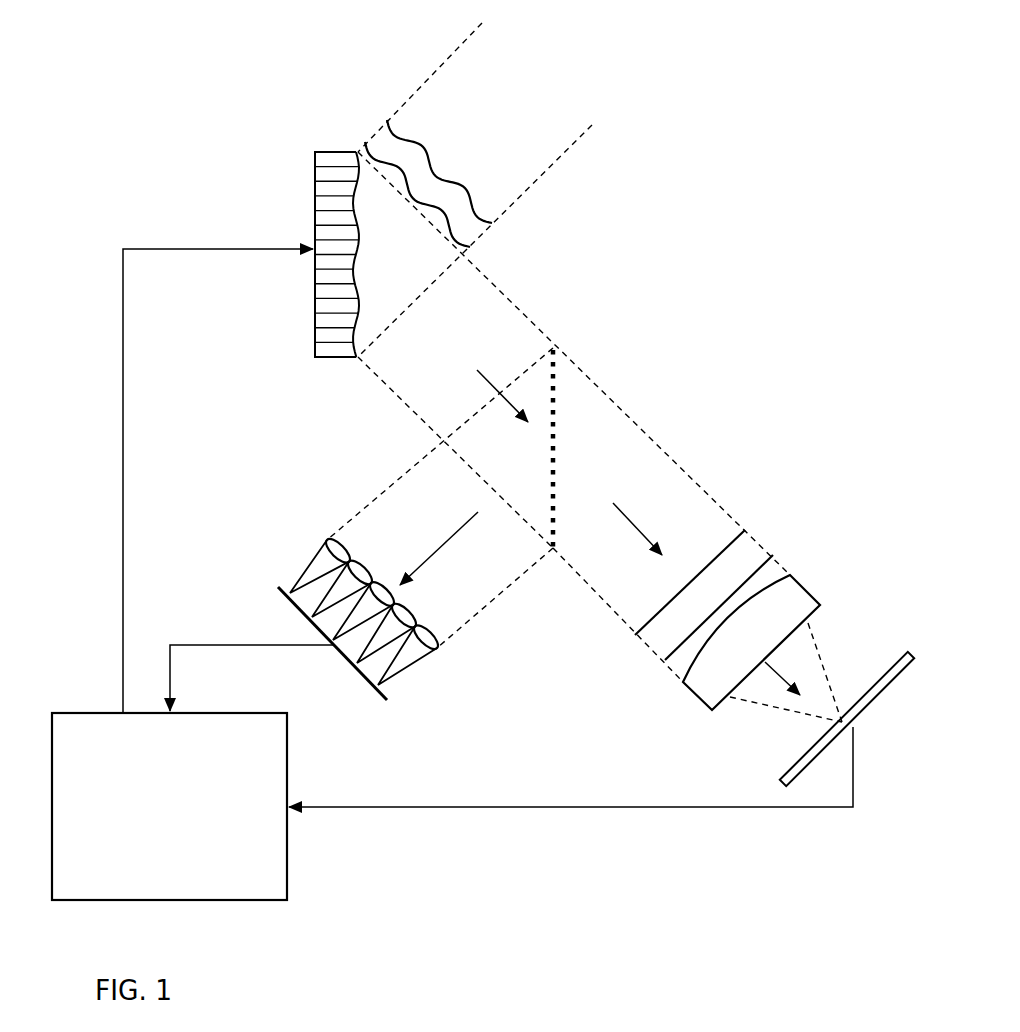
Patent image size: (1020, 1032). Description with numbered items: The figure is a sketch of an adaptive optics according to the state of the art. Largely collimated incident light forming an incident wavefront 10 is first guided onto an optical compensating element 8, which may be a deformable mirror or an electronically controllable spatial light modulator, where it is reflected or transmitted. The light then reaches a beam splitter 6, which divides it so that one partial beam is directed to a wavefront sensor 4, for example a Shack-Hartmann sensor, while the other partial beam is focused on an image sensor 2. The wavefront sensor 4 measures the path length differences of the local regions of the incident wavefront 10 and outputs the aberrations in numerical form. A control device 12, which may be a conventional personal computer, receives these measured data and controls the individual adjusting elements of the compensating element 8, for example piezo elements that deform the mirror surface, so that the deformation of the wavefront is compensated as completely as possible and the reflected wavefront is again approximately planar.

The image sensor 2 is at (847, 716).
The wavefront sensor 4 is at (357, 606).
The beam splitter 6 is at (569, 426).
The optical compensating element 8 is at (316, 254).
The incident wavefront 10 is at (460, 152).
The control device 12 is at (452, 574).